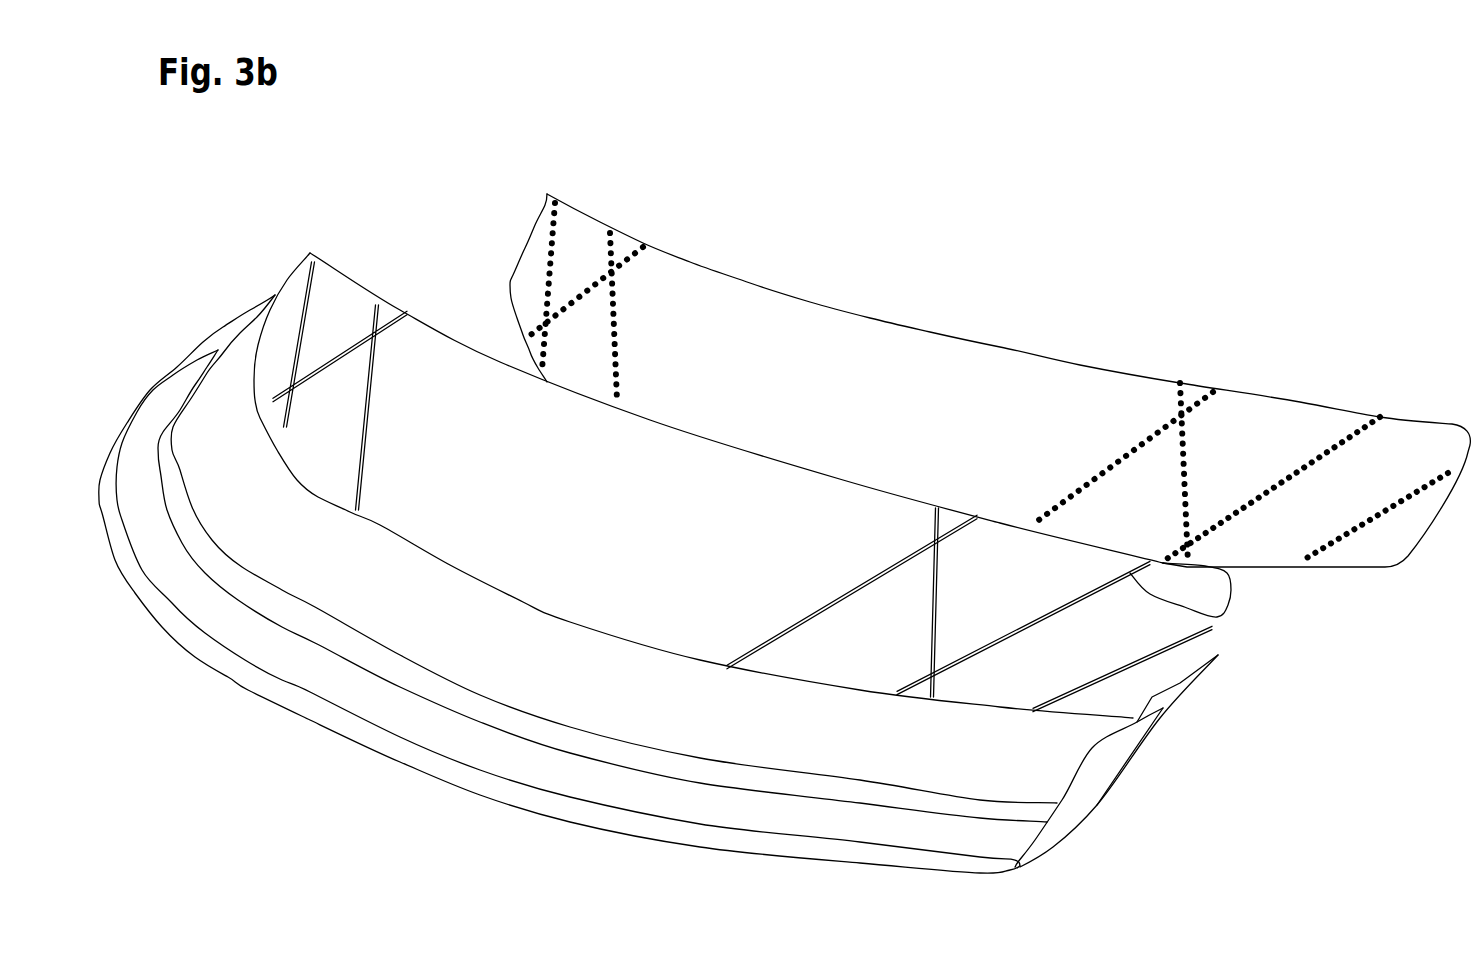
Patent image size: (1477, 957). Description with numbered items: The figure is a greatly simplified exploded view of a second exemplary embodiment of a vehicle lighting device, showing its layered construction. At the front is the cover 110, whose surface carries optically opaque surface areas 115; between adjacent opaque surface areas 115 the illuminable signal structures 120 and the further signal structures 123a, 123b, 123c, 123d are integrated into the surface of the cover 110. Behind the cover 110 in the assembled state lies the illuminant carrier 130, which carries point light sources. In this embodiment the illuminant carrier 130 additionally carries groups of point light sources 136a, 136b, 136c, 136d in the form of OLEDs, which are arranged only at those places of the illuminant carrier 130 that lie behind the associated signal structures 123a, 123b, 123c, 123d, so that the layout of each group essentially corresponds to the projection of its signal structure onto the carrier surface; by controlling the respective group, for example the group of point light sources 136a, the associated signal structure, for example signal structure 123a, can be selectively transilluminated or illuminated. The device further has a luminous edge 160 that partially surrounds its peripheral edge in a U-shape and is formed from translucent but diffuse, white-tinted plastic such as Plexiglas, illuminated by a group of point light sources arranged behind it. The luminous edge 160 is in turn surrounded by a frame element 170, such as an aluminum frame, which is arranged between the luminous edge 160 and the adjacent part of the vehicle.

The cover 110 is at (543, 558).
The optically opaque surface areas 115 is at (320, 340).
The illuminable signal structures 120 is at (367, 337).
The signal structure 123a is at (772, 662).
The signal structure 123b is at (930, 593).
The signal structure 123c is at (1224, 608).
The signal structure 123d is at (1153, 660).
The illuminant carrier 130 is at (940, 338).
The group of point light sources 136a is at (1153, 435).
The group of point light sources 136b is at (1187, 468).
The group of point light sources 136c is at (1340, 442).
The group of point light sources 136d is at (1430, 487).
The luminous edge 160 is at (455, 775).
The frame element 170 is at (417, 682).